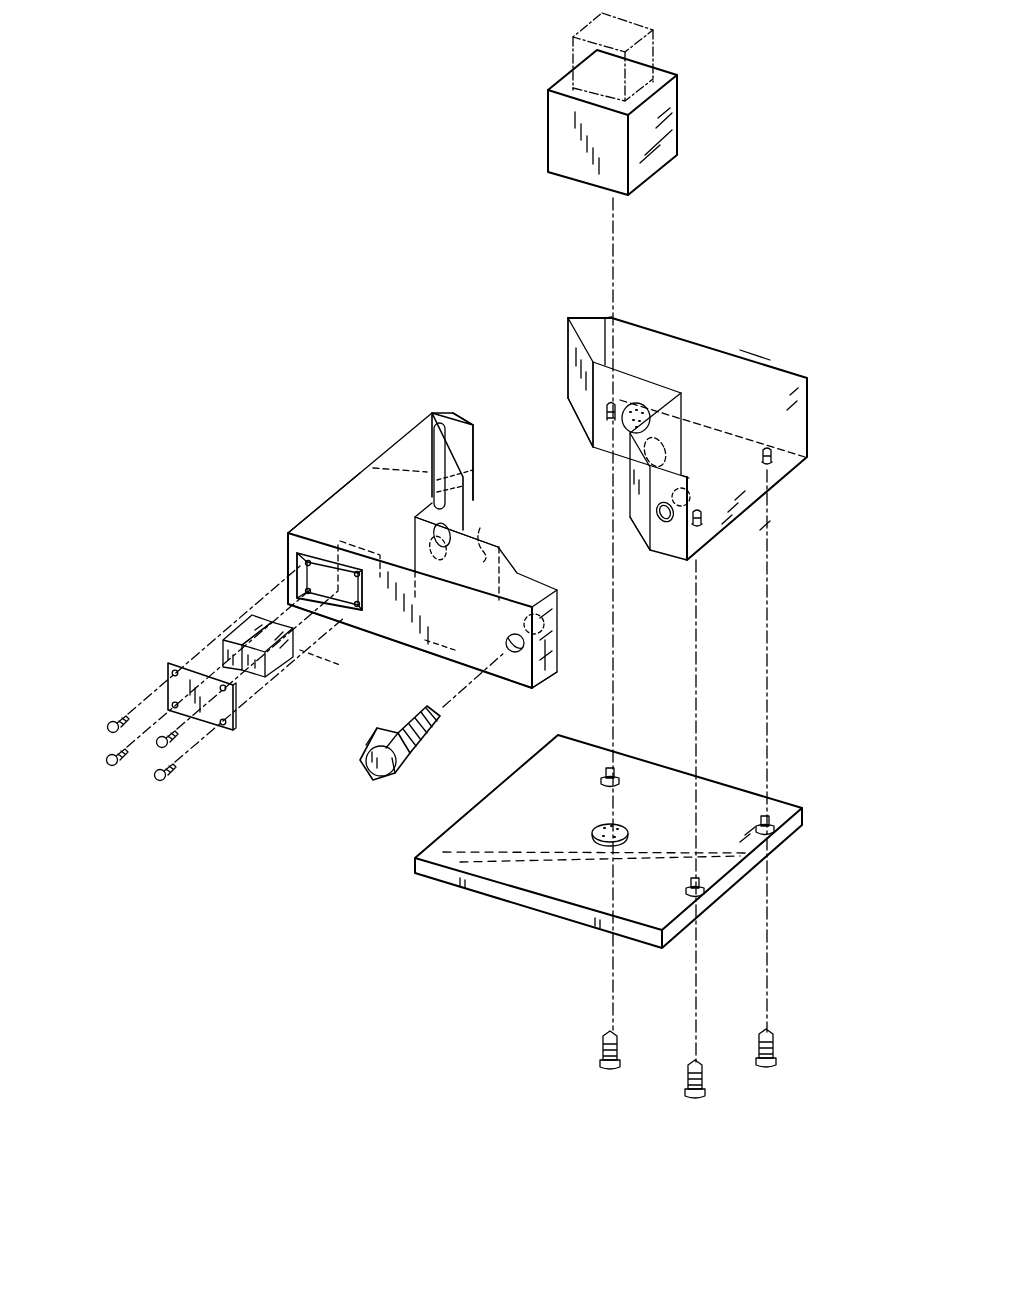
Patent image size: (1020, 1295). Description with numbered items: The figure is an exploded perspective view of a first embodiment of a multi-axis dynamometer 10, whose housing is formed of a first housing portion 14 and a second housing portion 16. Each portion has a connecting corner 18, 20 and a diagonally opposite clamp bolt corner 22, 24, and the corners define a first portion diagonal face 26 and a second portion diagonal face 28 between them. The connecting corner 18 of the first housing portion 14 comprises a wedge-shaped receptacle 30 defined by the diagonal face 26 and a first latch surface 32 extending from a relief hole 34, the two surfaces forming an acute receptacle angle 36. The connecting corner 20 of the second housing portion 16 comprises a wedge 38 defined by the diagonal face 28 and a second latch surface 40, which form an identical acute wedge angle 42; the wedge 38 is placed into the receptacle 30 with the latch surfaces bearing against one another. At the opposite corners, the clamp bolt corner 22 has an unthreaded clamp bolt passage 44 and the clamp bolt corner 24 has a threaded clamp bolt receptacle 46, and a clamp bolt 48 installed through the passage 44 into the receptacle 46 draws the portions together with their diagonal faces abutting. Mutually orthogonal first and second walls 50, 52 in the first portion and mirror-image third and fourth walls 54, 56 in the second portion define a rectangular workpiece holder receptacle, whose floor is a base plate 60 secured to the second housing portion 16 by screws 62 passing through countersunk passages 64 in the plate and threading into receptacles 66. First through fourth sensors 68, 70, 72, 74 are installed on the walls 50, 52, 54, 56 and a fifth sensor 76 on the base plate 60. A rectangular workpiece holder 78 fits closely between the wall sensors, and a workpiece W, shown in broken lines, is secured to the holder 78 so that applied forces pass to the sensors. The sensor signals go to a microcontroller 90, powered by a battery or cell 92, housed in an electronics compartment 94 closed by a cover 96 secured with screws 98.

The multi-axis dynamometer 10 is at (252, 234).
The workpiece W is at (572, 47).
The workpiece holder 78 is at (548, 125).
The connecting corner 20 is at (568, 316).
The wedge 38 is at (551, 310).
The second latch surface 40 is at (589, 315).
The second portion diagonal face 28 is at (570, 353).
The acute wedge angle 42 is at (592, 338).
The third wall 54 is at (652, 396).
The fourth wall 56 is at (746, 358).
The second housing portion 16 is at (654, 415).
The third sensor 72 is at (605, 424).
The fourth sensor 74 is at (620, 460).
The clamp bolt corner 24 is at (660, 540).
The threaded clamp bolt receptacle 46 is at (688, 560).
The receptacles 66 is at (760, 505).
The first housing portion 14 is at (408, 529).
The connecting corner 18 is at (432, 413).
The relief hole 34 is at (438, 395).
The acute receptacle angle 36 is at (462, 412).
The first latch surface 32 is at (432, 447).
The wedge-shaped receptacle 30 is at (485, 452).
The first portion diagonal face 26 is at (473, 473).
The first wall 50 is at (477, 527).
The second wall 52 is at (497, 527).
The first sensor 68 is at (416, 517).
The second sensor 70 is at (432, 656).
The unthreaded clamp bolt passage 44 is at (507, 662).
The clamp bolt corner 22 is at (547, 674).
The electronics compartment 94 is at (290, 582).
The clamp bolt 48 is at (370, 772).
The battery or cell 92 is at (235, 625).
The microcontroller 90 is at (278, 678).
The cover 96 is at (168, 668).
The screws 98 is at (160, 749).
The base plate 60 is at (492, 897).
The fifth sensor 76 is at (596, 830).
The passages 64 is at (614, 768).
The screws 62 is at (600, 1058).